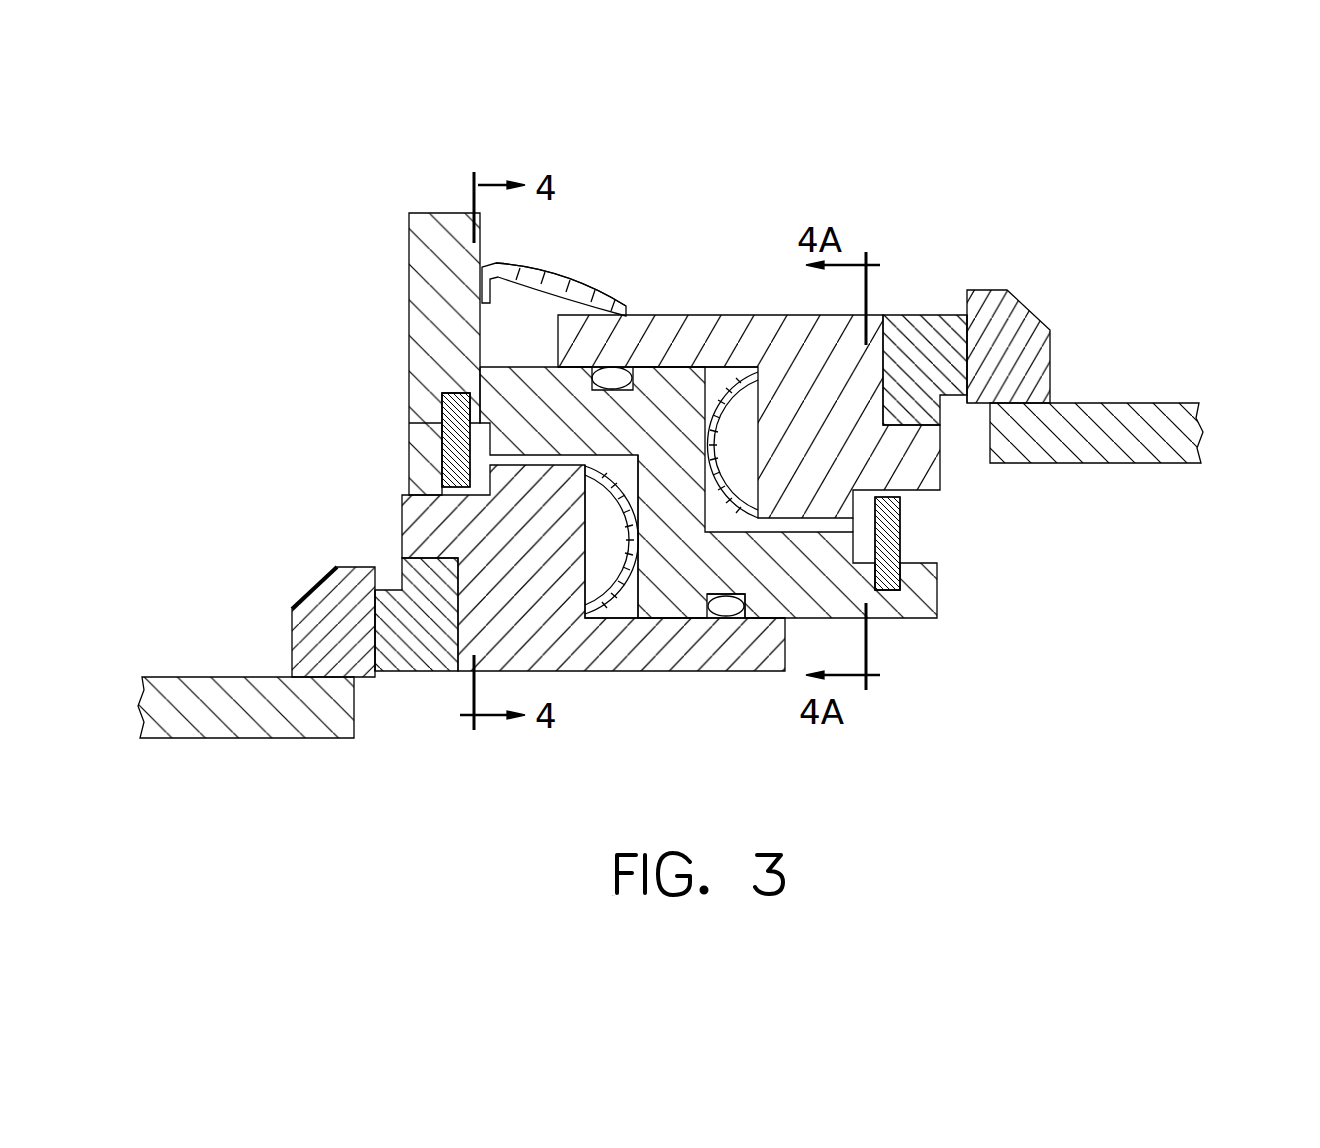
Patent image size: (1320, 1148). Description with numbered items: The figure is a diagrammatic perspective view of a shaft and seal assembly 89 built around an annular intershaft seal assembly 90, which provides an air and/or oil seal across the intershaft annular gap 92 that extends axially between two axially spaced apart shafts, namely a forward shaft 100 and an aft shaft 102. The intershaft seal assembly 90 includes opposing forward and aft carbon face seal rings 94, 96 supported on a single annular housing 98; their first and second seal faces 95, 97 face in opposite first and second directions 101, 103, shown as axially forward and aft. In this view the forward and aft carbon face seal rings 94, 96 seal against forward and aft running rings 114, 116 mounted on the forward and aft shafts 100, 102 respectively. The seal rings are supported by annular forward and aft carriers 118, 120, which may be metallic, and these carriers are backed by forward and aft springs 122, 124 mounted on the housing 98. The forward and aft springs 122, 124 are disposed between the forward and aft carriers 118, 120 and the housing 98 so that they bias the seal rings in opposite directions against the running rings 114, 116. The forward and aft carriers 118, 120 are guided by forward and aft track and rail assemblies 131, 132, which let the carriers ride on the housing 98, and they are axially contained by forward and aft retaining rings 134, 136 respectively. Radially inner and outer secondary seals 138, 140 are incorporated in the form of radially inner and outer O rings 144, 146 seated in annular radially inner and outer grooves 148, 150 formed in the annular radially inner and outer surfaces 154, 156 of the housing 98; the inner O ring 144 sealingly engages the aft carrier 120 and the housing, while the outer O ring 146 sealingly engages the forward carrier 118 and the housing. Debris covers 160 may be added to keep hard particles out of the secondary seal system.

The shaft and seal assembly 89 is at (618, 237).
The intershaft seal assembly 90 is at (685, 217).
The intershaft annular gap 92 is at (912, 766).
The forward carbon face seal ring 94 is at (405, 672).
The first seal face 95 is at (375, 619).
The aft carbon face seal ring 96 is at (905, 315).
The second seal face 97 is at (967, 330).
The single annular housing 98 is at (886, 626).
The forward shaft 100 is at (247, 740).
The first direction 101 is at (180, 135).
The aft shaft 102 is at (1130, 468).
The second direction 103 is at (1268, 325).
The forward running ring 114 is at (292, 640).
The aft running ring 116 is at (985, 290).
The forward carrier 118 is at (672, 672).
The aft carrier 120 is at (781, 315).
The forward spring 122 is at (608, 602).
The aft spring 124 is at (732, 382).
The forward track and rail assembly 131 is at (473, 434).
The aft track and rail assembly 132 is at (862, 522).
The forward retaining ring 134 is at (455, 458).
The aft retaining ring 136 is at (888, 541).
The radially inner secondary seal 138 is at (718, 616).
The radially outer secondary seal 140 is at (605, 372).
The radially inner O ring 144 is at (740, 628).
The radially outer O ring 146 is at (620, 366).
The radially inner groove 148 is at (748, 620).
The radially outer groove 150 is at (608, 345).
The radially inner surface 154 is at (643, 622).
The radially outer surface 156 is at (695, 366).
The debris cover 160 is at (507, 288).